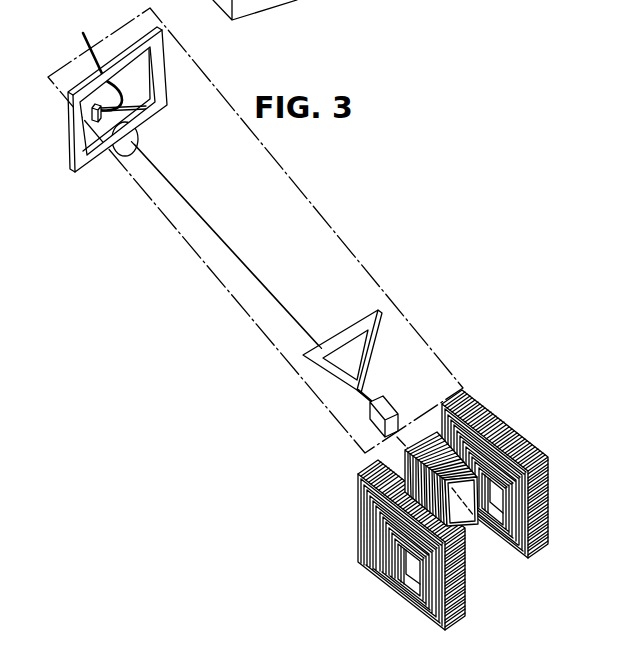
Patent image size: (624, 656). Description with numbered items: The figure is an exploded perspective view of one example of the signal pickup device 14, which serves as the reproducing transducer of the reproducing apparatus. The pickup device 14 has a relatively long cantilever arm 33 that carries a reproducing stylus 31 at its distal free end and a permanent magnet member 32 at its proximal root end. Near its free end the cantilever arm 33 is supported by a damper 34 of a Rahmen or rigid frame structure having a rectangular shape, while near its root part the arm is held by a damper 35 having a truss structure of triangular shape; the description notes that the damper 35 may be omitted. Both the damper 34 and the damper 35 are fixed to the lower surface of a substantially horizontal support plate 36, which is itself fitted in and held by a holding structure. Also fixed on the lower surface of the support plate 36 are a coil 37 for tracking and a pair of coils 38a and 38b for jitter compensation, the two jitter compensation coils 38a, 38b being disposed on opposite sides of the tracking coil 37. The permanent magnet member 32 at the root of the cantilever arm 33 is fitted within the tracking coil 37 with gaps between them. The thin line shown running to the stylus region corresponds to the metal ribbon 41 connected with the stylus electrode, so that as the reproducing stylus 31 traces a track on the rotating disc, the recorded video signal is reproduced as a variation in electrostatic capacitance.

The signal pickup device 14 is at (331, 179).
The reproducing stylus 31 is at (93, 110).
The permanent magnet member 32 is at (370, 432).
The cantilever arm 33 is at (237, 251).
The damper 34 is at (164, 86).
The damper 35 is at (360, 326).
The support plate 36 is at (358, 258).
The coil for tracking 37 is at (458, 507).
The coil for jitter compensation 38a is at (373, 570).
The coil for jitter compensation 38b is at (520, 452).
The suspension wire 41 is at (79, 41).